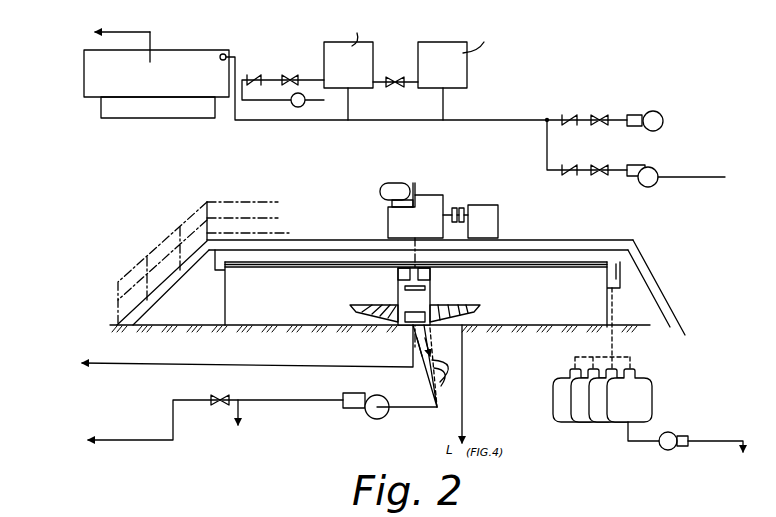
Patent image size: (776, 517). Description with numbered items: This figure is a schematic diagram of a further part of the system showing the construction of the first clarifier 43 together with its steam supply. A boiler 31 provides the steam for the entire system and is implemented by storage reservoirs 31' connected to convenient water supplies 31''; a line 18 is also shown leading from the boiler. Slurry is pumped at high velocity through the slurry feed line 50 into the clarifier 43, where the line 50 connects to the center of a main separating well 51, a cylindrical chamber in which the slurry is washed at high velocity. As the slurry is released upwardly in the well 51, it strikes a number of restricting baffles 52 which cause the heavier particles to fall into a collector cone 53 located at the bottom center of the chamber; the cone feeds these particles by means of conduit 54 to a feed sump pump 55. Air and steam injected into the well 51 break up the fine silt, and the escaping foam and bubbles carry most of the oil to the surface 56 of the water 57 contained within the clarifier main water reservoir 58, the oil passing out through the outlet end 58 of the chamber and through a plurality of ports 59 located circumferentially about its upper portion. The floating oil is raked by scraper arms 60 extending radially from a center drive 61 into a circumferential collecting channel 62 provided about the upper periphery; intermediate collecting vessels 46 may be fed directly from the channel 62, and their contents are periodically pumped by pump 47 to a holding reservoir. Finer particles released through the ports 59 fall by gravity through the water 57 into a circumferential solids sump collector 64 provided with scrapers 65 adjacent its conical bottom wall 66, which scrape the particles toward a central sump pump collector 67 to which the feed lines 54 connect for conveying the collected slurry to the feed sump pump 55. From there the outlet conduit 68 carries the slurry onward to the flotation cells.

The supply line from boiler 18 is at (150, 32).
The boiler 31 is at (315, 71).
The storage reservoirs 31' is at (384, 72).
The water supplies 31'' is at (636, 136).
The clarifier 43 is at (603, 210).
The intermediate collecting vessels 46 is at (562, 402).
The pump 47 is at (690, 426).
The slurry feed line 50 is at (300, 358).
The main separating well 51 is at (430, 293).
The restricting baffles 52 is at (398, 287).
The collector cone 53 is at (405, 320).
The conduit 54 is at (443, 340).
The feed sump pump 55 is at (400, 388).
The surface 56 is at (530, 268).
The water 57 is at (587, 305).
The clarifier main water reservoir 58 is at (225, 306).
The ports 59 is at (430, 272).
The scraper arms 60 is at (293, 264).
The center drive 61 is at (434, 197).
The circumferential collecting channel 62 is at (616, 277).
The circumferential solids sump collector 64 is at (352, 302).
The scrapers 65 is at (443, 321).
The conical bottom wall 66 is at (356, 312).
The sump pump collector 67 is at (415, 322).
The outlet conduit 68 is at (324, 400).